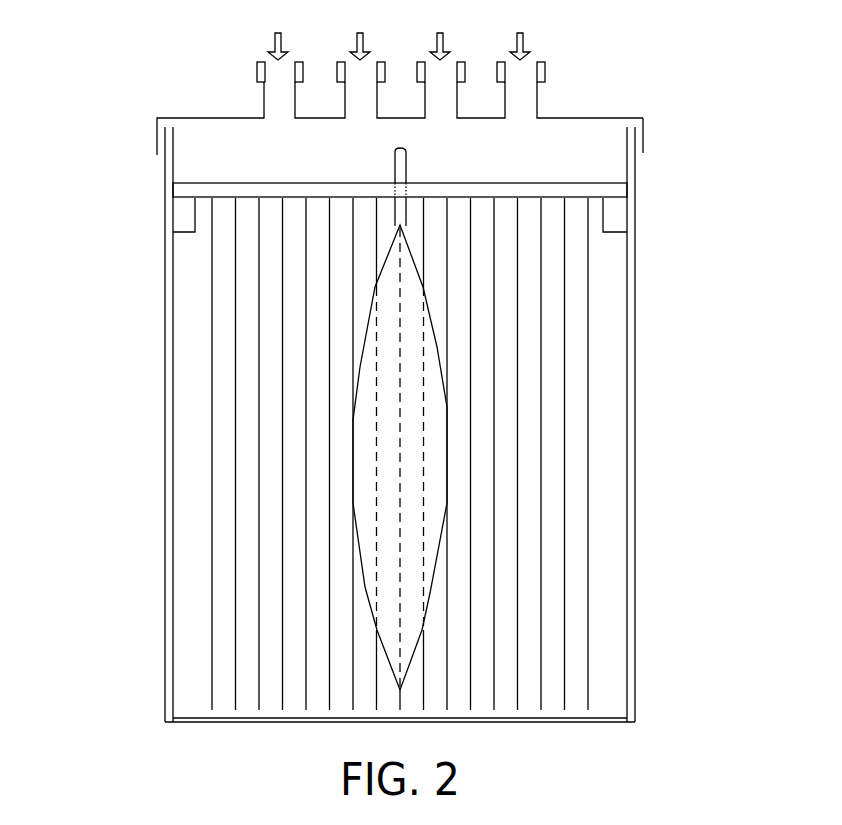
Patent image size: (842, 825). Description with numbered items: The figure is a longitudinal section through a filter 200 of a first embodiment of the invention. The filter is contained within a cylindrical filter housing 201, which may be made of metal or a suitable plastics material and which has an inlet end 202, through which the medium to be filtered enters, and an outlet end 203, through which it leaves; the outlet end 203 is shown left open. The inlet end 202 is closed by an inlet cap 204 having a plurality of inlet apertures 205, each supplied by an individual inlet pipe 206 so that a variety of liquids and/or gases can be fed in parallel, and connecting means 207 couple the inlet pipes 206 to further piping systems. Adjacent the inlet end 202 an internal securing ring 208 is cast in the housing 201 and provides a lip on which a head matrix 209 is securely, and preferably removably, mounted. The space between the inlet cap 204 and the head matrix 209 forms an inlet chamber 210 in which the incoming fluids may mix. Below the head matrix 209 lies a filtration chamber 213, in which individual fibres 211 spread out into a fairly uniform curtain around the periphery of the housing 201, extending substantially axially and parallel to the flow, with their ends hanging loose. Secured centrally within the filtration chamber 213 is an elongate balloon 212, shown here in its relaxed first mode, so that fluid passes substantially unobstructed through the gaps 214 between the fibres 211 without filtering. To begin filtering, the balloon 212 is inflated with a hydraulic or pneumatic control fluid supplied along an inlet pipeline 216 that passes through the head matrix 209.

The filter 200 is at (147, 472).
The filter housing 201 is at (634, 398).
The inlet end 202 is at (660, 128).
The outlet end 203 is at (659, 654).
The inlet cap 204 is at (159, 117).
The inlet apertures 205 is at (280, 90).
The inlet pipes 206 is at (264, 102).
The connecting means 207 is at (541, 59).
The internal securing ring 208 is at (618, 217).
The head matrix 209 is at (627, 196).
The inlet chamber 210 is at (552, 137).
The fibres 211 is at (588, 527).
The balloon 212 is at (357, 367).
The filtration chamber 213 is at (528, 328).
The gaps 214 is at (295, 318).
The inlet pipeline 216 is at (395, 156).